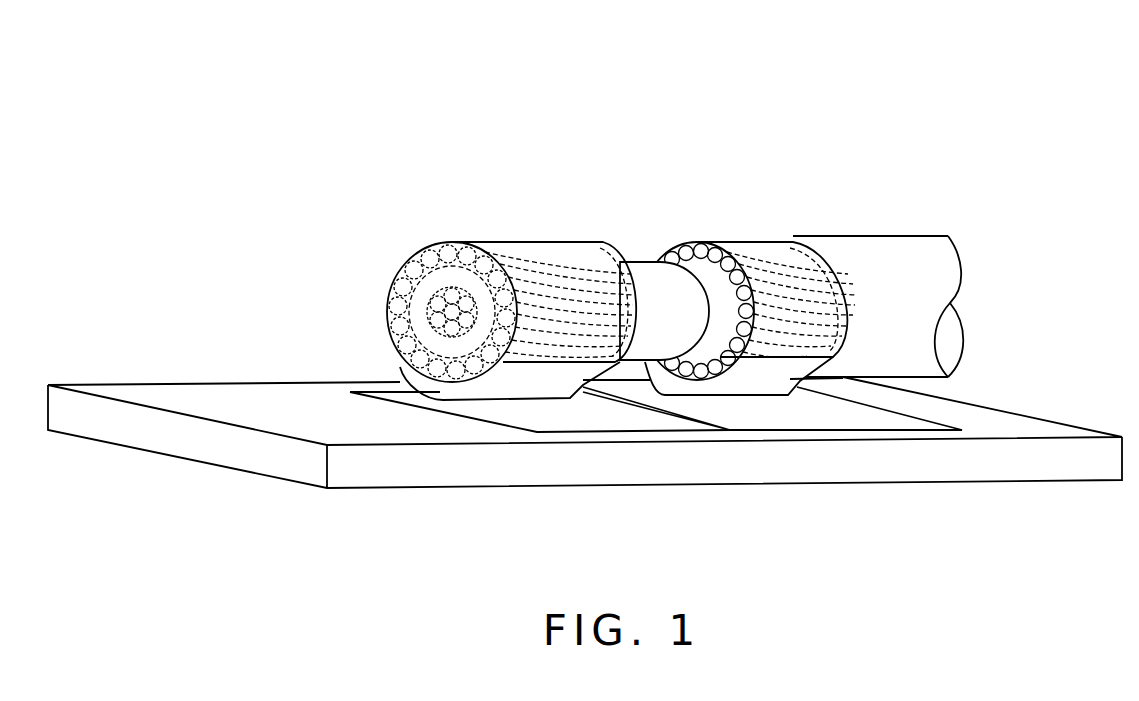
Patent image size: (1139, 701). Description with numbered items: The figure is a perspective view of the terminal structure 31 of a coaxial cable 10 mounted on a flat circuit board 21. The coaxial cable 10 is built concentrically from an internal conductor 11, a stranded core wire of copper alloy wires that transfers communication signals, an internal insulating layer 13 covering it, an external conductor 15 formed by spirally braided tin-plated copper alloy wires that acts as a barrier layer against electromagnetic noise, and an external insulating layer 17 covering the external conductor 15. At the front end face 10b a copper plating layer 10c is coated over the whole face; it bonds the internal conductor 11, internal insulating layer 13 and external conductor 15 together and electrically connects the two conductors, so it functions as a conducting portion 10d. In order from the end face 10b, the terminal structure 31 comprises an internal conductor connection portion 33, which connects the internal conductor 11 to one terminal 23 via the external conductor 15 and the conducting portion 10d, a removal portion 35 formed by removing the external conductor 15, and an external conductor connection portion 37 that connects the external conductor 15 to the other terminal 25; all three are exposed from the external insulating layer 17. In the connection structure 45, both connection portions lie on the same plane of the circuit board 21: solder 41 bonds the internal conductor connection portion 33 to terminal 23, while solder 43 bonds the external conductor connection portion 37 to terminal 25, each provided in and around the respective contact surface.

The coaxial cable 10 is at (884, 119).
The end face 10b is at (412, 247).
The copper plating layer 10c is at (492, 247).
The conducting portion 10d is at (403, 262).
The internal conductor 11 is at (413, 333).
The internal insulating layer 13 is at (436, 305).
The external conductor 15 is at (548, 247).
The external insulating layer 17 is at (903, 240).
The flat circuit board 21 is at (938, 462).
The terminal 23 is at (598, 422).
The terminal 25 is at (818, 418).
The terminal structure 31 is at (639, 129).
The internal conductor connection portion 33 is at (526, 226).
The removal portion 35 is at (625, 246).
The external conductor connection portion 37 is at (788, 246).
The solder 41 is at (493, 380).
The solder 43 is at (745, 378).
The connection structure 45 is at (445, 408).